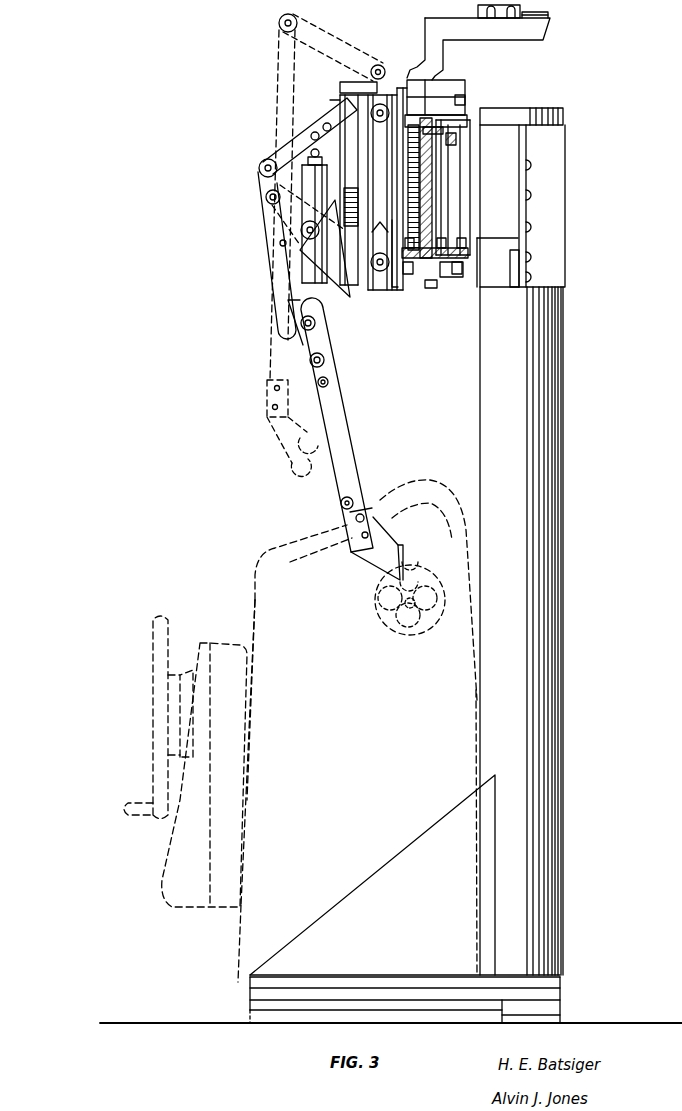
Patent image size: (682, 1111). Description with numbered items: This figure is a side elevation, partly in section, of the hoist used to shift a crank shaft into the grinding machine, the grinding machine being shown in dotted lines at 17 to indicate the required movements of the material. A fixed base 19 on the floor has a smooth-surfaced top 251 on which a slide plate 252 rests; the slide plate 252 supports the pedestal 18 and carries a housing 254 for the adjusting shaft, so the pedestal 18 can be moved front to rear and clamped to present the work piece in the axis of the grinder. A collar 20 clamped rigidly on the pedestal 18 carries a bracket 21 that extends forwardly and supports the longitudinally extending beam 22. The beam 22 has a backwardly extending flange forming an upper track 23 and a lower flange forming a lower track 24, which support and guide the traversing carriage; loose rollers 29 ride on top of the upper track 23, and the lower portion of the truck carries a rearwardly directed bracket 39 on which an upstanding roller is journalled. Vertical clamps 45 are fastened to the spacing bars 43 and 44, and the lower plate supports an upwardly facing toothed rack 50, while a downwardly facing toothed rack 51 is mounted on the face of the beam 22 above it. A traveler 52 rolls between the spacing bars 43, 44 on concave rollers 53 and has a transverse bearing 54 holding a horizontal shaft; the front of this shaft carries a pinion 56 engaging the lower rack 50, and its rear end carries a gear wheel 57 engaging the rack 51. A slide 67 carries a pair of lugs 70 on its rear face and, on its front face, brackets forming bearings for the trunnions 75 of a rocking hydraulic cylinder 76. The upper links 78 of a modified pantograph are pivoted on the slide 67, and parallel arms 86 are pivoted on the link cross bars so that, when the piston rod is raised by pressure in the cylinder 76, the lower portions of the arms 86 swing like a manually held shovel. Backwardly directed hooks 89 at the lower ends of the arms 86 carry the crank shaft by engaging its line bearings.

The machine for grinding crank bearings 17 is at (413, 510).
The pedestal 18 is at (557, 477).
The fixed base 19 is at (562, 999).
The collar 20 is at (562, 180).
The bracket 21 is at (507, 177).
The beam 22 is at (421, 190).
The upper track 23 is at (443, 158).
The lower track 24 is at (447, 247).
The loose roller 29 is at (433, 88).
The rearwardly directed bracket 39 is at (430, 264).
The spacing bar 43 is at (365, 105).
The spacing bar 44 is at (398, 280).
The vertical clamp 45 is at (390, 97).
The toothed rack 50 is at (328, 312).
The toothed rack 51 is at (414, 158).
The traveler 52 is at (373, 157).
The concave roller 53 is at (375, 130).
The transverse bearing 54 is at (377, 196).
The pinion 56 is at (347, 193).
The gear wheel 57 is at (421, 203).
The slide 67 is at (350, 98).
The lug 70 is at (370, 72).
The trunnion 75 is at (278, 215).
The rocking hydraulic cylinder 76 is at (307, 178).
The upper link 78 is at (283, 146).
The arm 86 is at (318, 340).
The hook 89 is at (403, 562).
The top 251 is at (557, 978).
The slide plate 252 is at (238, 983).
The housing 254 is at (388, 878).